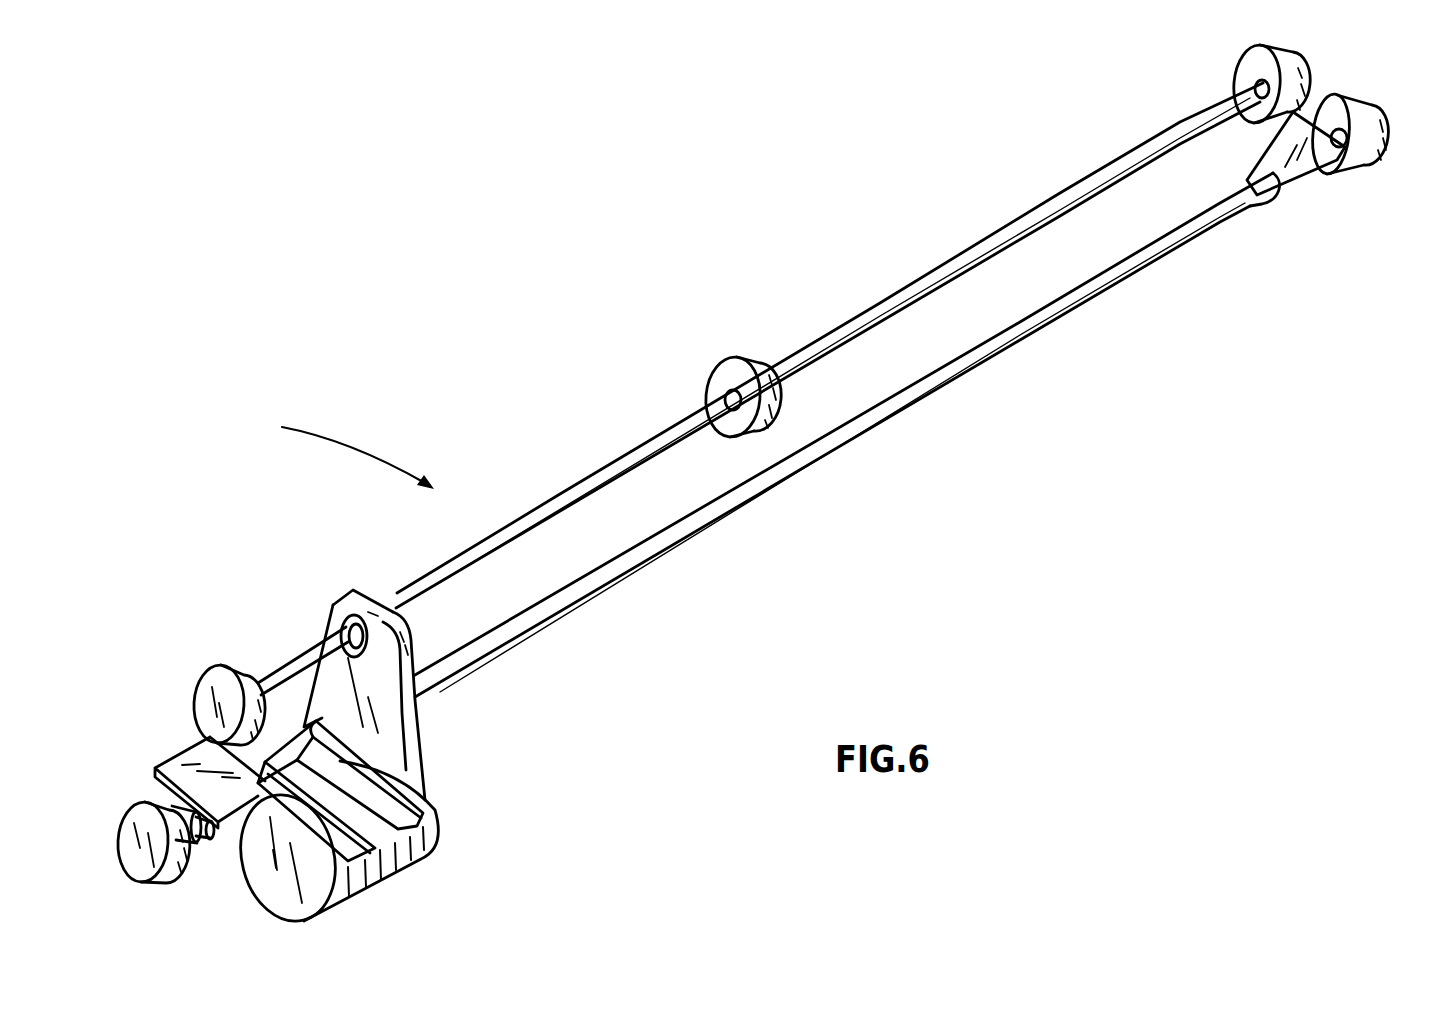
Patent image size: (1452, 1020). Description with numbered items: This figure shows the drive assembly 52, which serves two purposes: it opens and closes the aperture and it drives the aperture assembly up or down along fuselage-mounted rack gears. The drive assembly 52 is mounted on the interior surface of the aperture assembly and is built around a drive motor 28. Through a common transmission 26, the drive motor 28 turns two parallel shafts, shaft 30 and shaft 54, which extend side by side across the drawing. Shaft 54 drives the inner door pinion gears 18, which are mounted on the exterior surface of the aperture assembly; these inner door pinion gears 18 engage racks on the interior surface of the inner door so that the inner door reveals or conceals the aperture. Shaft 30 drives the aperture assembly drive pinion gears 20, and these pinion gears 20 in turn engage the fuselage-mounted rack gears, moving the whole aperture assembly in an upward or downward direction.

The inner door pinion gears 18 is at (1238, 54).
The aperture assembly drive pinion gears 20 is at (1378, 157).
The common transmission 26 is at (422, 718).
The drive motor 28 is at (425, 802).
The shaft 30 is at (998, 343).
The drive assembly 52 is at (335, 450).
The shaft 54 is at (622, 464).